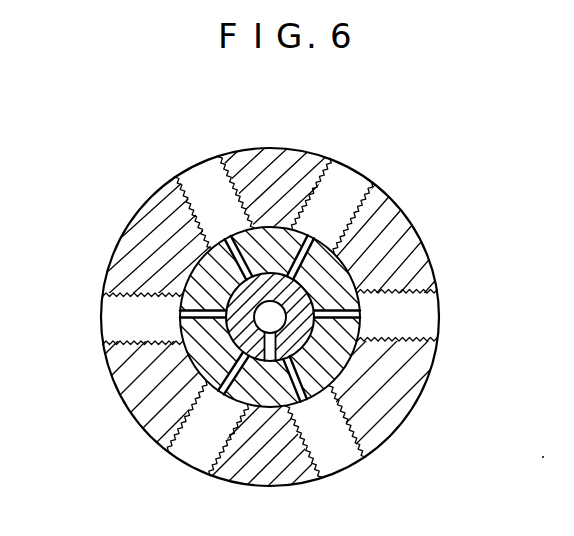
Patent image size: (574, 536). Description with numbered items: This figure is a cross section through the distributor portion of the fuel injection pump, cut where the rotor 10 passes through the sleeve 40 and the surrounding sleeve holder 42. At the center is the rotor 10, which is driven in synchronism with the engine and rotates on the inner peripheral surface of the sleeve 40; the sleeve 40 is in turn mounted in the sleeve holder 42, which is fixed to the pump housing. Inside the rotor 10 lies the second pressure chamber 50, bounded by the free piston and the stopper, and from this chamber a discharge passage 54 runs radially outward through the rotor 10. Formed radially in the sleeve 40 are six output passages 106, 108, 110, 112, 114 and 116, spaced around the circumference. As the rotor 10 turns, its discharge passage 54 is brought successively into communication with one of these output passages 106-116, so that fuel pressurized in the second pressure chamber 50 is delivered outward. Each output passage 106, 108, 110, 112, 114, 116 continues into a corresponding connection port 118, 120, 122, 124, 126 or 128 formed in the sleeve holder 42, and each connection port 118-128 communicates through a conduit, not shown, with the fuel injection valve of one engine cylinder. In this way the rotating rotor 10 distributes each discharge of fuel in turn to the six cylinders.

The rotor 10 is at (297, 227).
The sleeve 40 is at (263, 407).
The sleeve holder 42 is at (390, 417).
The second pressure chamber 50 is at (200, 360).
The discharge passage 54 is at (340, 373).
The output passage 106 is at (205, 247).
The output passage 108 is at (370, 227).
The output passage 110 is at (360, 317).
The output passage 112 is at (308, 403).
The output passage 114 is at (182, 408).
The output passage 116 is at (181, 313).
The connection port 118 is at (200, 190).
The connection port 120 is at (352, 188).
The connection port 122 is at (422, 313).
The connection port 124 is at (347, 460).
The connection port 126 is at (192, 453).
The connection port 128 is at (108, 321).